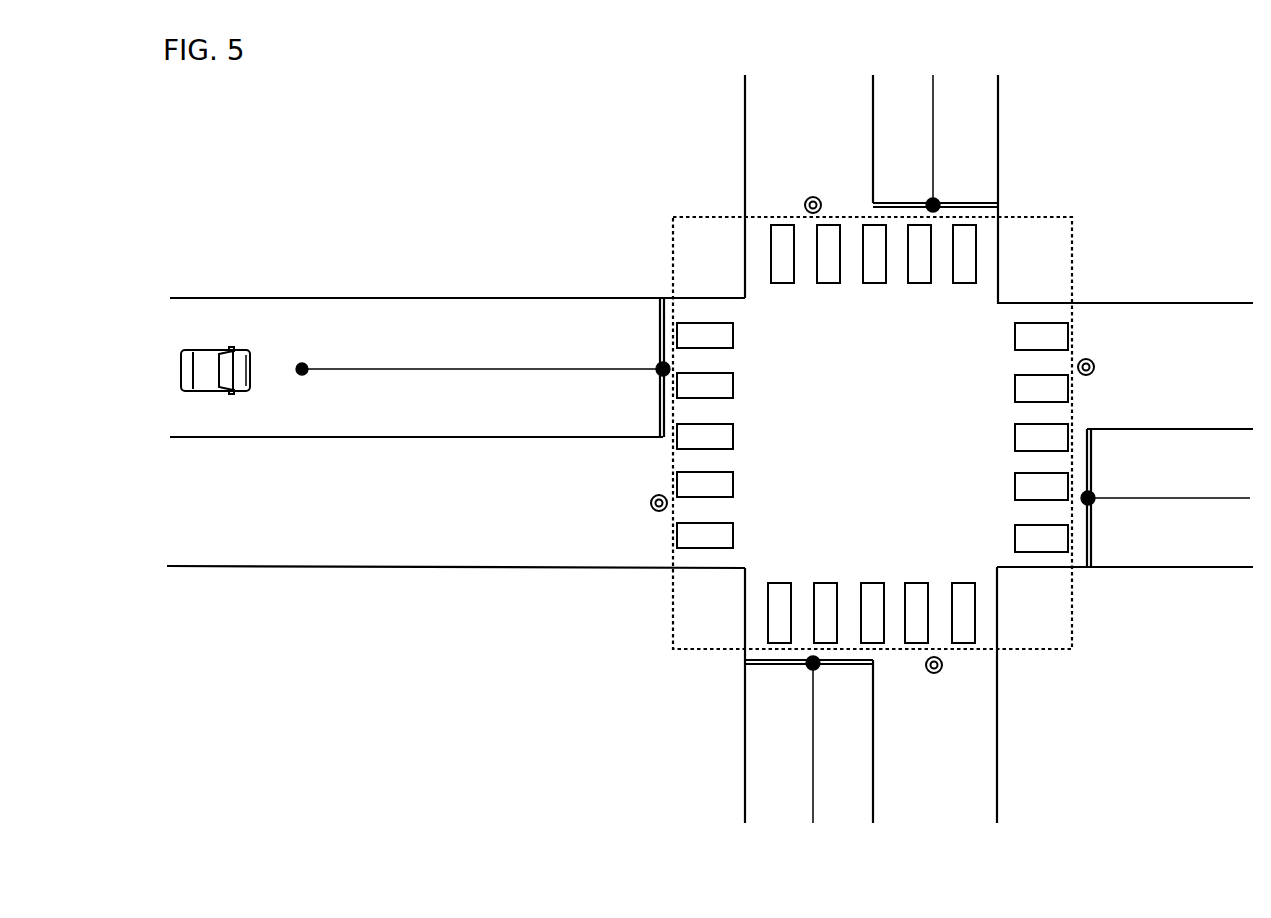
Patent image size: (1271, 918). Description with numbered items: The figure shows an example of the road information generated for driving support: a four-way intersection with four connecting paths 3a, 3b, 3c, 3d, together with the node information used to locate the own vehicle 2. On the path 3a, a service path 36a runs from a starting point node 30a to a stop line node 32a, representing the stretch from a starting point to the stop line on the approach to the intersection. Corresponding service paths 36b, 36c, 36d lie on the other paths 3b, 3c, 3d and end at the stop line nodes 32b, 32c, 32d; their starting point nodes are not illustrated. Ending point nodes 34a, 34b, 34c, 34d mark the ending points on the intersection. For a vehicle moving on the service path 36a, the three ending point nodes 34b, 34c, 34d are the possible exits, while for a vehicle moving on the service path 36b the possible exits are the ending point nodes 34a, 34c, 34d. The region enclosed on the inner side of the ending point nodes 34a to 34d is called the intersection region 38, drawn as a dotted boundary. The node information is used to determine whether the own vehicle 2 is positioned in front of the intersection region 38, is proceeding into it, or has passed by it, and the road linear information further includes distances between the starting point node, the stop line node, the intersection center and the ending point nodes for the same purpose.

The own vehicle 2 is at (219, 350).
The path 3a is at (428, 312).
The path 3b is at (756, 810).
The path 3c is at (1138, 565).
The path 3d is at (982, 149).
The starting point node 30a is at (306, 364).
The stop line node 32a is at (656, 365).
The stop line node 32b is at (821, 671).
The stop line node 32c is at (1096, 497).
The stop line node 32d is at (941, 200).
The ending point node 34a is at (652, 511).
The ending point node 34b is at (940, 675).
The ending point node 34c is at (1095, 364).
The ending point node 34d is at (820, 197).
The service path 36a is at (473, 367).
The service path 36b is at (812, 779).
The service path 36c is at (1200, 499).
The service path 36d is at (934, 110).
The intersection region 38 is at (1075, 217).